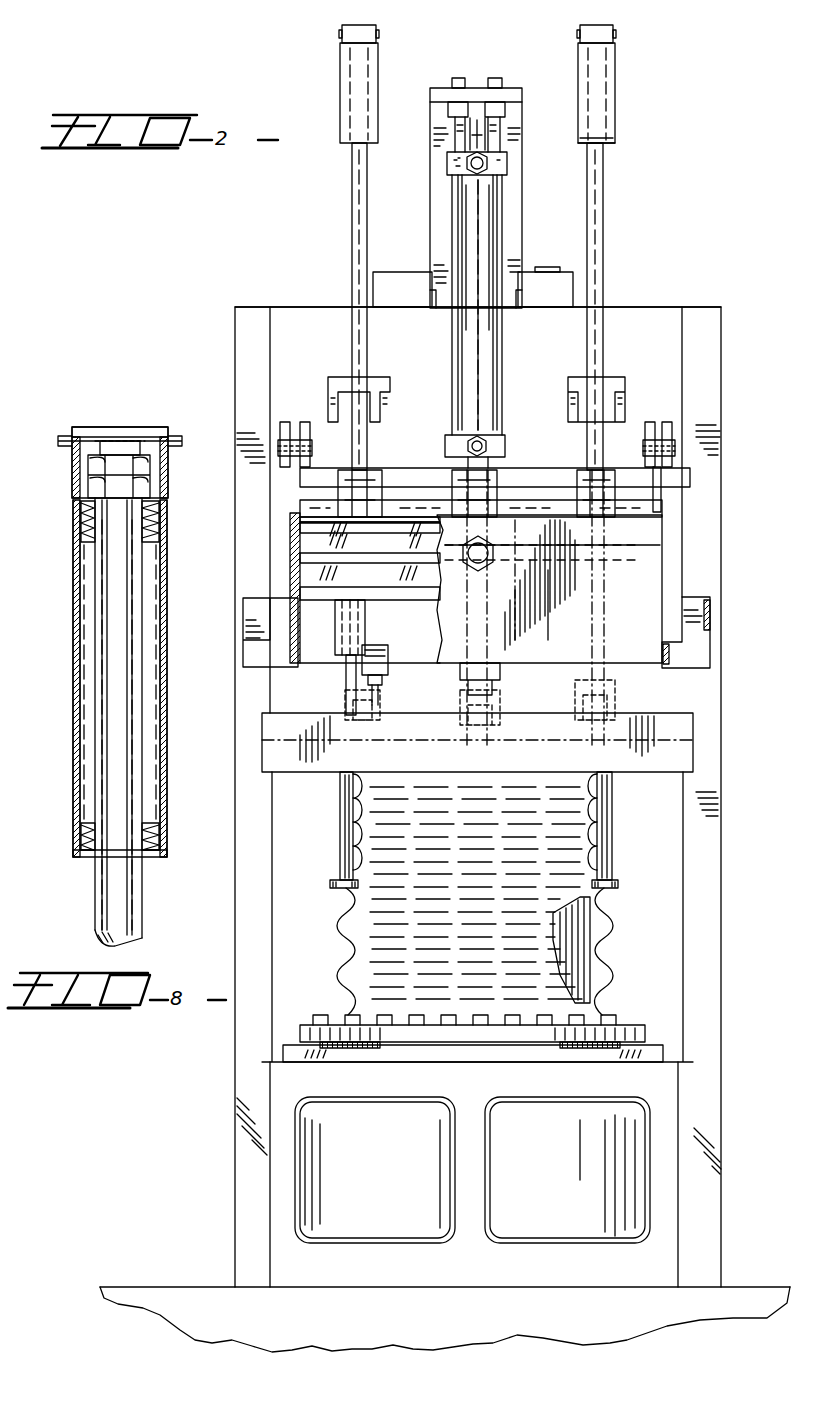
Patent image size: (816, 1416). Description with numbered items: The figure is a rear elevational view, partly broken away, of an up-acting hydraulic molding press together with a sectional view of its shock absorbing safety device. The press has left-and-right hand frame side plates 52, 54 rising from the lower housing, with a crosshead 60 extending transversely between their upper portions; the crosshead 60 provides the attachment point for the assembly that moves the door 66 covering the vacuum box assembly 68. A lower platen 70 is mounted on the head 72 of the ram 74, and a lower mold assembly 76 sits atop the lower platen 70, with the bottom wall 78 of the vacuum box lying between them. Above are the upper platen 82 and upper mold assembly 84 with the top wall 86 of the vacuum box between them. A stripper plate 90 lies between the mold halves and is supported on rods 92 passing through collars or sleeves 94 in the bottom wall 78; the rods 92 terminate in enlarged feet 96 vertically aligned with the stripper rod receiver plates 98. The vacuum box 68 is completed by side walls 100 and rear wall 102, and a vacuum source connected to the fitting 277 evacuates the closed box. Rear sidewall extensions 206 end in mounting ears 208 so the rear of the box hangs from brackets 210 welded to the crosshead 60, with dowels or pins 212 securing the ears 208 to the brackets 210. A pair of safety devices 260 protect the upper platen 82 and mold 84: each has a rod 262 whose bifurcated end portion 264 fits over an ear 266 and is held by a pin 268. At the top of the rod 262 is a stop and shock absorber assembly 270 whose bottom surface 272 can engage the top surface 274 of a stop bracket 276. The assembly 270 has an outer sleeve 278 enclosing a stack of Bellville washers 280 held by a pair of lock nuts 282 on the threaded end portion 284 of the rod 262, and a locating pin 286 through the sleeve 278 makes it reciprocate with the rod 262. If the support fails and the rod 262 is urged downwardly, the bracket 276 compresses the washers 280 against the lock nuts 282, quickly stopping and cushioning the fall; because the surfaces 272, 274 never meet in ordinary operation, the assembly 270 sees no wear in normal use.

In FIG. 2, the frame side plate 52 is at (722, 832).
In FIG. 2, the frame side plate 54 is at (245, 948).
In FIG. 2, the crosshead 60 is at (652, 318).
In FIG. 2, the door 66 is at (270, 662).
In FIG. 2, the vacuum box assembly 68 is at (672, 590).
In FIG. 2, the lower platen 70 is at (385, 630).
In FIG. 2, the head 72 is at (532, 701).
In FIG. 2, the ram 74 is at (570, 945).
In FIG. 2, the lower mold assembly 76 is at (300, 593).
In FIG. 2, the bottom wall 78 is at (290, 620).
In FIG. 2, the upper platen 82 is at (330, 512).
In FIG. 2, the upper mold assembly 84 is at (300, 527).
In FIG. 2, the top wall 86 is at (300, 522).
In FIG. 2, the stripper plate 90 is at (300, 558).
In FIG. 2, the rods 92 is at (340, 790).
In FIG. 2, the collars or sleeves 94 is at (330, 668).
In FIG. 2, the enlarged feet 96 is at (340, 885).
In FIG. 2, the stripper rod receiver plates 98 is at (298, 1045).
In FIG. 2, the side walls 100 is at (280, 645).
In FIG. 2, the rear wall 102 is at (712, 640).
In FIG. 2, the rear sidewall extensions 206 is at (660, 492).
In FIG. 2, the mounting ears 208 is at (655, 440).
In FIG. 2, the brackets 210 is at (285, 425).
In FIG. 2, the dowels or pins 212 is at (318, 440).
In FIG. 2, the safety devices 260 is at (350, 240).
In FIG. 2, the rod 262 is at (597, 262).
In FIG. 8, the rod 262 is at (115, 910).
In FIG. 2, the bifurcated end portion 264 is at (585, 485).
In FIG. 2, the ear 266 is at (662, 512).
In FIG. 2, the pin 268 is at (388, 500).
In FIG. 2, the stop and shock absorber assembly 270 is at (685, 106).
In FIG. 8, the stop and shock absorber assembly 270 is at (58, 630).
In FIG. 2, the bottom surface 272 is at (604, 142).
In FIG. 8, the bottom surface 272 is at (90, 865).
In FIG. 2, the top surface 274 is at (628, 318).
In FIG. 2, the stop bracket 276 is at (612, 380).
In FIG. 2, the fitting 277 is at (662, 548).
In FIG. 8, the outer sleeve 278 is at (75, 770).
In FIG. 8, the Bellville washers 280 is at (85, 522).
In FIG. 8, the lock nuts 282 is at (92, 490).
In FIG. 8, the threaded end portion 284 is at (110, 450).
In FIG. 2, the locating pin 286 is at (376, 28).
In FIG. 8, the locating pin 286 is at (132, 440).